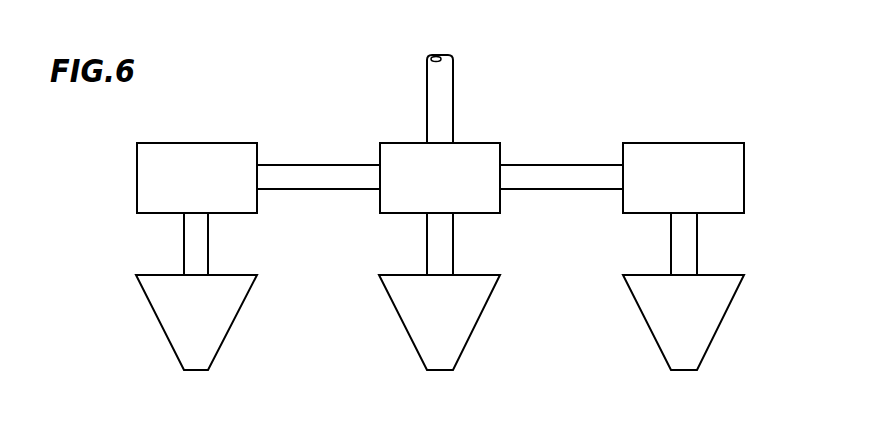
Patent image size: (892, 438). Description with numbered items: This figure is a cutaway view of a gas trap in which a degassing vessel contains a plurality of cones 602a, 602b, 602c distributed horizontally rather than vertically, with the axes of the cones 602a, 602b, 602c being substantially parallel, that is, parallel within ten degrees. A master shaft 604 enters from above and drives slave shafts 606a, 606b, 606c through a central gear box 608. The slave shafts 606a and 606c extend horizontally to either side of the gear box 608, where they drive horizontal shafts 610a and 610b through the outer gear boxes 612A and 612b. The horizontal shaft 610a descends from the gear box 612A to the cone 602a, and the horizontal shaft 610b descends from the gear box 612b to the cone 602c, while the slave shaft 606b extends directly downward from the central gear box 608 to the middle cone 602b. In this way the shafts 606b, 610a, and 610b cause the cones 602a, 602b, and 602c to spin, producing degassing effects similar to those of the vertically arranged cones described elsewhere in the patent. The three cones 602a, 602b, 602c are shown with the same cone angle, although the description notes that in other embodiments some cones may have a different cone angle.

The cone 602a is at (169, 312).
The cone 602b is at (412, 312).
The cone 602c is at (656, 312).
The master shaft 604 is at (453, 74).
The slave shaft 606a is at (314, 164).
The slave shaft 606b is at (453, 248).
The slave shaft 606c is at (575, 164).
The gear box 608 is at (485, 143).
The horizontal shaft 610a is at (208, 252).
The horizontal shaft 610b is at (697, 236).
The gear box 612A is at (203, 143).
The gear box 612b is at (722, 143).